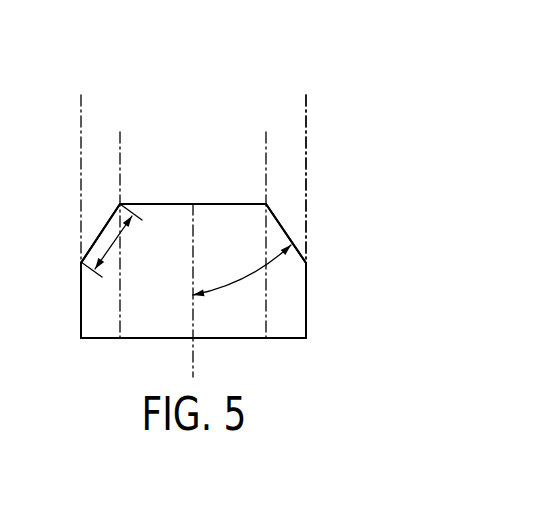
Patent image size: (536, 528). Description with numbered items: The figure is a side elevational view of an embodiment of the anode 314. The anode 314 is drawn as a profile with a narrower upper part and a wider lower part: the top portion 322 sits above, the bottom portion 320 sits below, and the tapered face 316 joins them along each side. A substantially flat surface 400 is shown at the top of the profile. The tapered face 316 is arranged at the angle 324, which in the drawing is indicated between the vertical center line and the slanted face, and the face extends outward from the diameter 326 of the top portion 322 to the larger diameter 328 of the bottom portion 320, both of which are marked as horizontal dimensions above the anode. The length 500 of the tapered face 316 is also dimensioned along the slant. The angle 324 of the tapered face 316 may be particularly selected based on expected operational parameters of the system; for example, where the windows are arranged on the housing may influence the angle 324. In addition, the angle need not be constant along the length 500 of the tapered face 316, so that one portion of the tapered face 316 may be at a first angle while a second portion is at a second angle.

The anode 314 is at (373, 120).
The tapered face 316 is at (288, 236).
The bottom portion 320 is at (333, 298).
The top portion 322 is at (317, 183).
The angle 324 is at (239, 281).
The diameter of the top portion 326 is at (266, 143).
The diameter of the bottom portion 328 is at (306, 106).
The substantially flat surface 400 is at (155, 204).
The length of the tapered face 500 is at (108, 253).